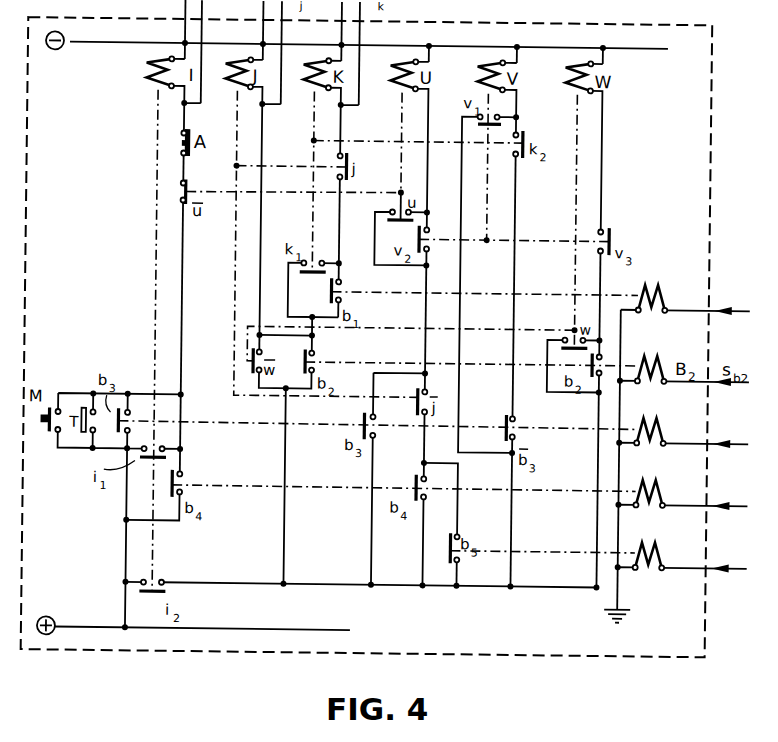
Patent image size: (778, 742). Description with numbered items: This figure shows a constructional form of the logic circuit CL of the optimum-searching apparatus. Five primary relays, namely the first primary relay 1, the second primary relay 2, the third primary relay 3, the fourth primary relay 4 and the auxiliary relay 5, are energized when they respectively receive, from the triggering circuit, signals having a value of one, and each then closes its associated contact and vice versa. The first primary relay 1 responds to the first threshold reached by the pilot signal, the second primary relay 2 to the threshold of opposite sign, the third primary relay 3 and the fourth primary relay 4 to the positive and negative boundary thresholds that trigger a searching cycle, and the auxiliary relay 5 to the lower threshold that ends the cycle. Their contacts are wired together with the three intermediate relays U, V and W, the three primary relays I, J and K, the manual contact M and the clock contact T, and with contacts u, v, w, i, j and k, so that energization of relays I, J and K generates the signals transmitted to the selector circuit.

The second primary relay 2 is at (367, 328).
The first primary relay 1 is at (685, 300).
The third primary relay 3 is at (683, 433).
The fourth primary relay 4 is at (682, 495).
The auxiliary relay 5 is at (682, 557).